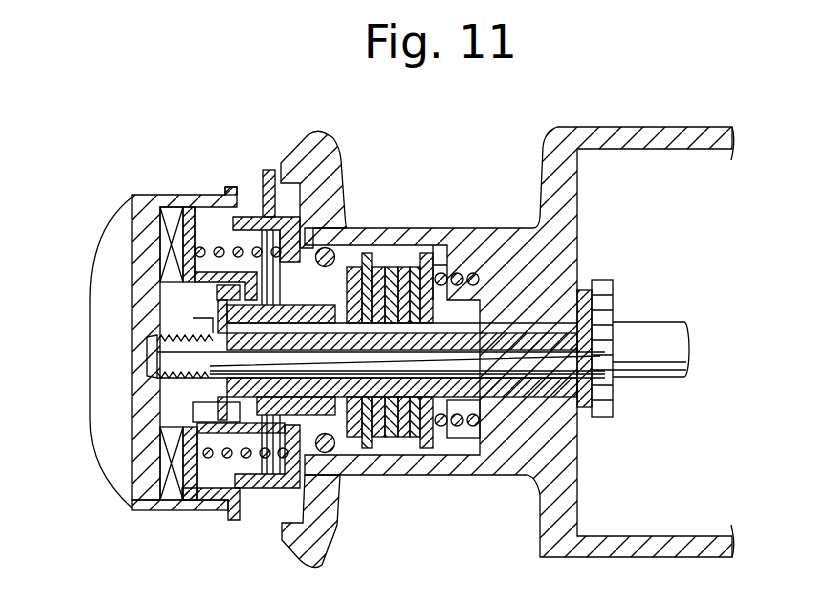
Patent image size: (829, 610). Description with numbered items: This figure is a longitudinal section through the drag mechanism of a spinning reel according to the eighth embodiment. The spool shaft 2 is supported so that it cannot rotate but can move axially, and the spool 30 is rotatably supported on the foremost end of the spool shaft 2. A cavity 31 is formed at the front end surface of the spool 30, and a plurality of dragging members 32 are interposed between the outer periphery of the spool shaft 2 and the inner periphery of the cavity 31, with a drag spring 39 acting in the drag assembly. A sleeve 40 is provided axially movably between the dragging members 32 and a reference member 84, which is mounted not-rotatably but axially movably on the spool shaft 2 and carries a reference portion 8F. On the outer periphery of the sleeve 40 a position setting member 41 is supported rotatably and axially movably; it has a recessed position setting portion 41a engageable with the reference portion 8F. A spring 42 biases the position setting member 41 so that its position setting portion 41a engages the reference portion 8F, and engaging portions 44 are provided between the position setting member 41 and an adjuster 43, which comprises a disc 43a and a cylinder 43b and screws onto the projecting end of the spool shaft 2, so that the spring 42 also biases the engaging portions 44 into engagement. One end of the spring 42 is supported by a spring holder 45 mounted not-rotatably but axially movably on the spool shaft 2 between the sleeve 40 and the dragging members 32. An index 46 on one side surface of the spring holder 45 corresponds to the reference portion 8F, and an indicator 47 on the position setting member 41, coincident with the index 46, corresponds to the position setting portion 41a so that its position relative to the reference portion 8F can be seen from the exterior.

The spool shaft 2 is at (525, 340).
The spool 30 is at (333, 137).
The cavity 31 is at (445, 273).
The dragging members 32 is at (393, 270).
The drag spring 39 is at (458, 273).
The sleeve 40 is at (313, 315).
The position setting member 41 is at (183, 255).
The position setting portion 41a is at (242, 283).
The spring 42 is at (183, 260).
The adjuster 43 is at (82, 390).
The disc 43a is at (143, 462).
The cylinder 43b is at (187, 507).
The engaging portions 44 is at (168, 217).
The spring holder 45 is at (298, 195).
The index 46 is at (266, 177).
The indicator 47 is at (230, 187).
The reference member 84 is at (197, 247).
The reference portion 8F is at (230, 288).